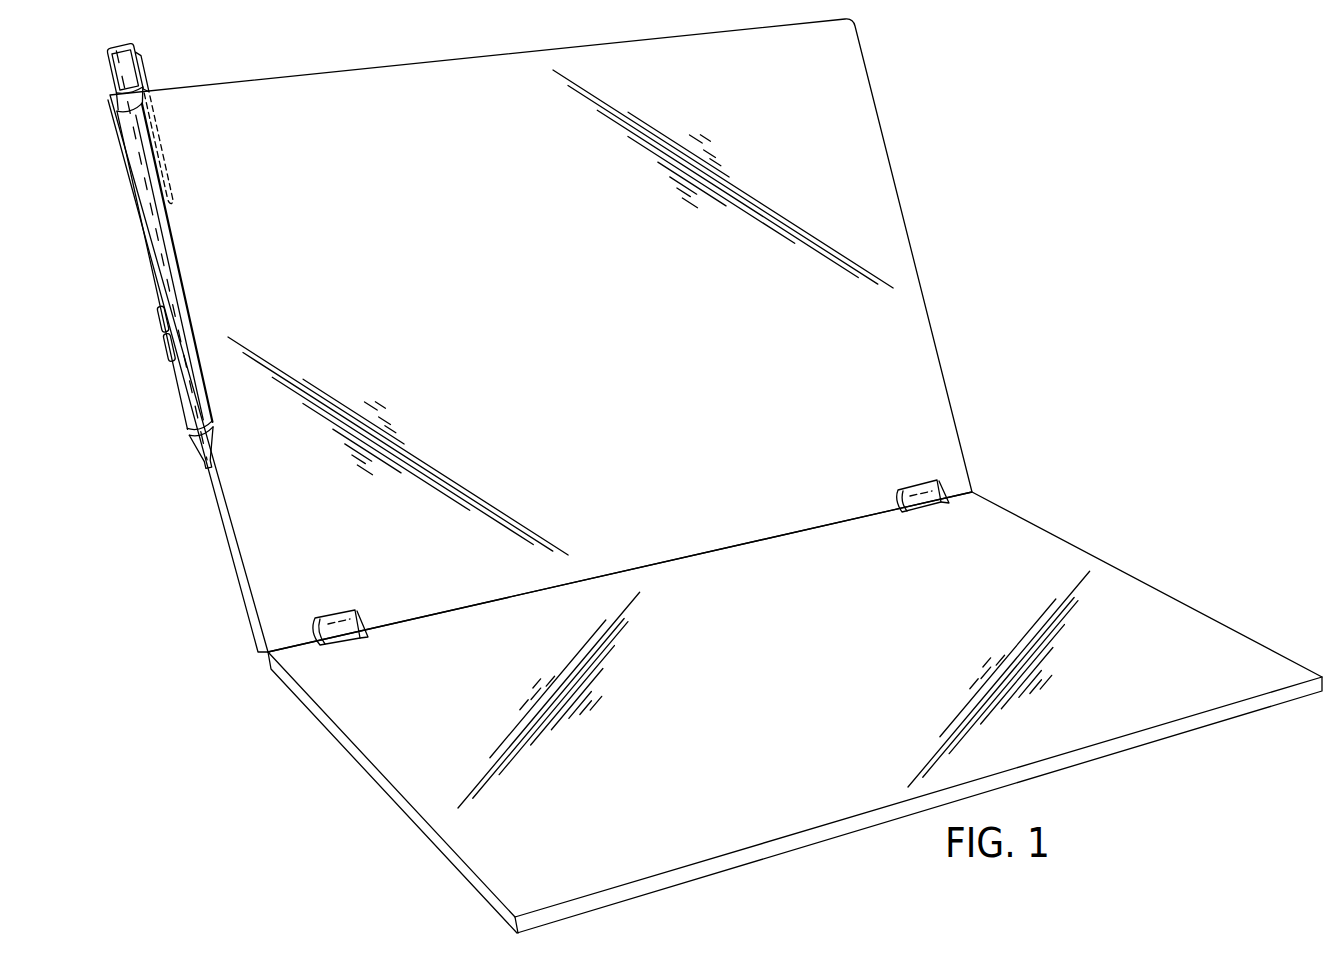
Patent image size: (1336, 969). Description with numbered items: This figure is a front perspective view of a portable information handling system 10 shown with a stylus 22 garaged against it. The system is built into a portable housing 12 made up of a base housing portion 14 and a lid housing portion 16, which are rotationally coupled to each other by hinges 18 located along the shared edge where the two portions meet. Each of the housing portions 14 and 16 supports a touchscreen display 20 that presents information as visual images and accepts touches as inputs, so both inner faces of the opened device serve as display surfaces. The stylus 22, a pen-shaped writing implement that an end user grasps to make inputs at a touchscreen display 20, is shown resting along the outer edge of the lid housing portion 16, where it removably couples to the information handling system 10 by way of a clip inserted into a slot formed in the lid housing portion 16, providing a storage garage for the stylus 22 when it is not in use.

The portable information handling system 10 is at (1201, 741).
The portable housing 12 is at (236, 551).
The base housing portion 14 is at (391, 804).
The lid housing portion 16 is at (284, 76).
The hinges 18 is at (338, 617).
The touchscreen display 20 is at (597, 311).
The stylus 22 is at (141, 225).